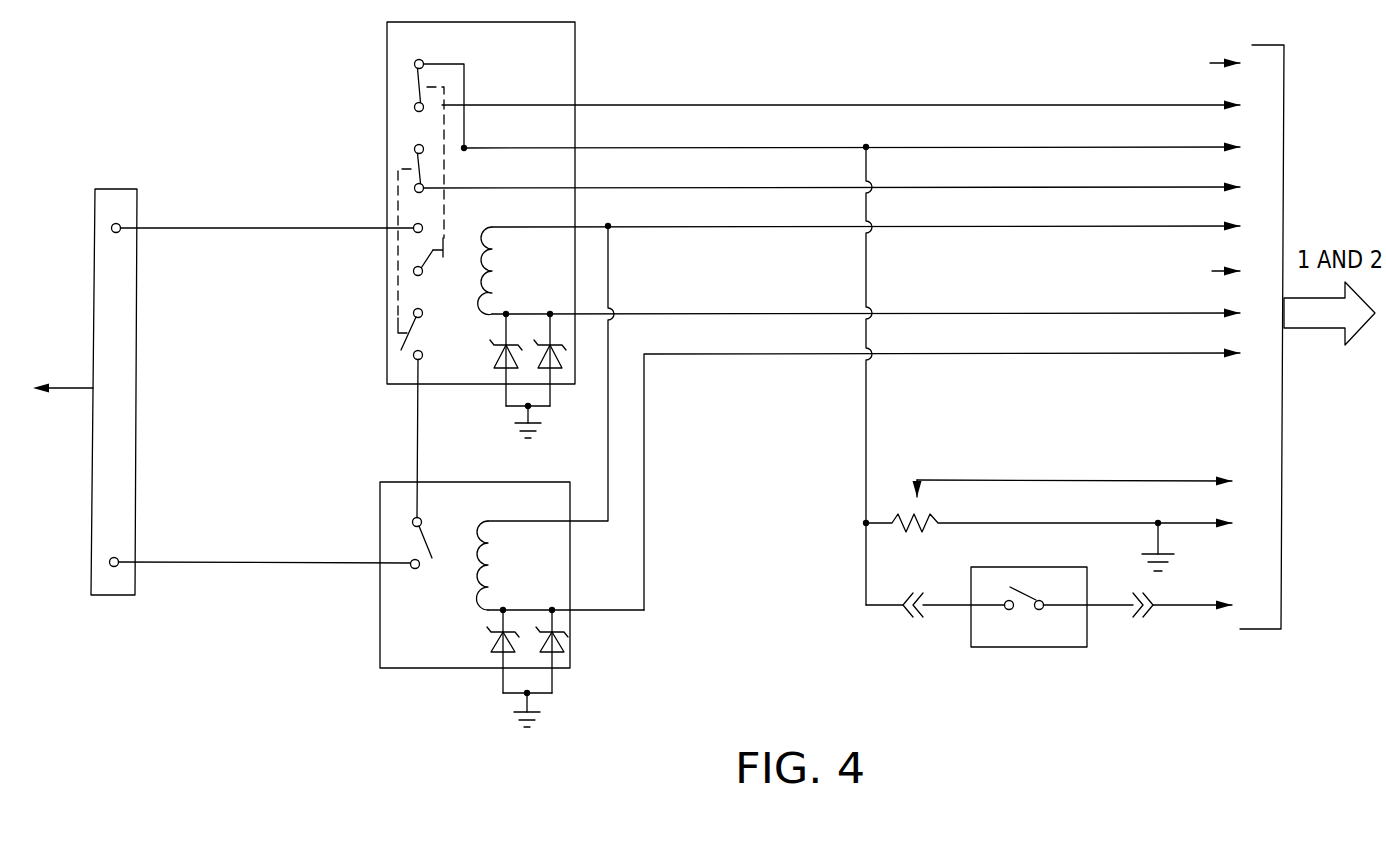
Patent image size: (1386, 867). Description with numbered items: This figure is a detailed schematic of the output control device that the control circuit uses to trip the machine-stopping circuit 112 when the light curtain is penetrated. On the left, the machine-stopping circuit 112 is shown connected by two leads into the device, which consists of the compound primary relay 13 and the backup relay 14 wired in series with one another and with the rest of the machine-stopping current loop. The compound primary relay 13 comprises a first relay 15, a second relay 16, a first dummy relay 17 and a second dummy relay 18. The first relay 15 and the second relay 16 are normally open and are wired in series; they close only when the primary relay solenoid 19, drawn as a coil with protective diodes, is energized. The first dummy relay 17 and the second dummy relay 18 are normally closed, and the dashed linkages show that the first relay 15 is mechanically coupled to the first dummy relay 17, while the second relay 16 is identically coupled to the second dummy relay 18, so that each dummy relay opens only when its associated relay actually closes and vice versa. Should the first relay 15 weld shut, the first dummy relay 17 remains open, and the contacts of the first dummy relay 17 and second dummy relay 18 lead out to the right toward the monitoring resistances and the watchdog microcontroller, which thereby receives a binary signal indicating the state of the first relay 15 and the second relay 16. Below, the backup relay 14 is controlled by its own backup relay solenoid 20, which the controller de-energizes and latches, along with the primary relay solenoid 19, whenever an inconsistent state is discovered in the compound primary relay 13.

The compound primary relay 13 is at (387, 49).
The backup relay 14 is at (425, 572).
The first relay 15 is at (417, 248).
The second relay 16 is at (427, 293).
The first dummy relay 17 is at (417, 92).
The second dummy relay 18 is at (417, 156).
The primary relay solenoid 19 is at (507, 227).
The backup relay solenoid 20 is at (490, 521).
The machine-stopping circuit 112 is at (85, 392).